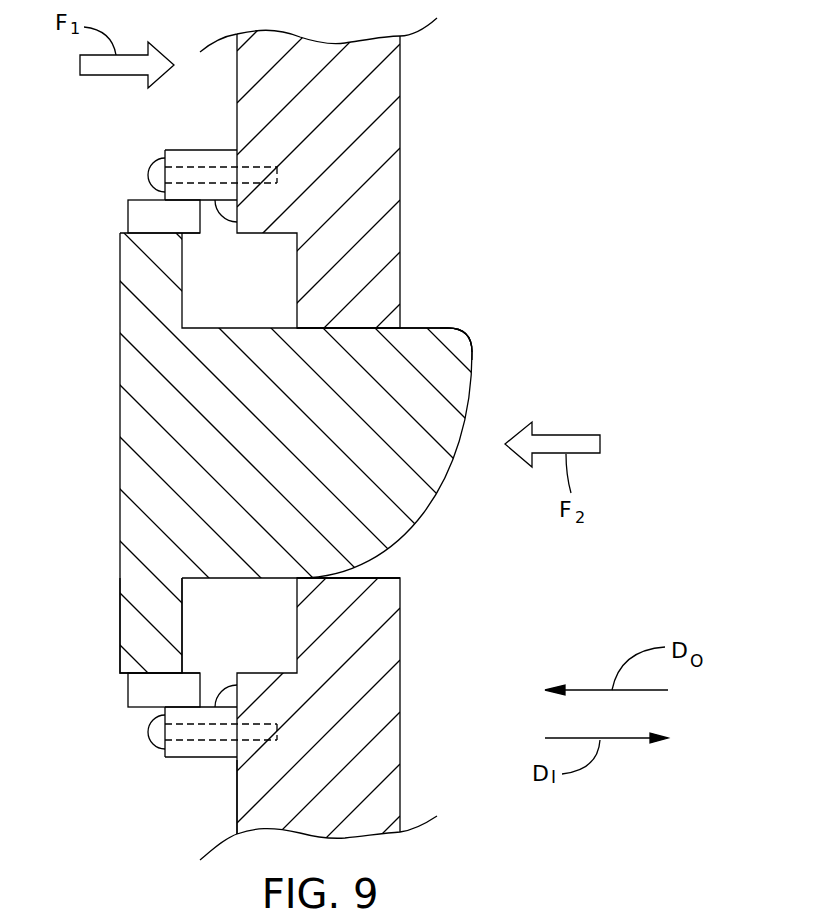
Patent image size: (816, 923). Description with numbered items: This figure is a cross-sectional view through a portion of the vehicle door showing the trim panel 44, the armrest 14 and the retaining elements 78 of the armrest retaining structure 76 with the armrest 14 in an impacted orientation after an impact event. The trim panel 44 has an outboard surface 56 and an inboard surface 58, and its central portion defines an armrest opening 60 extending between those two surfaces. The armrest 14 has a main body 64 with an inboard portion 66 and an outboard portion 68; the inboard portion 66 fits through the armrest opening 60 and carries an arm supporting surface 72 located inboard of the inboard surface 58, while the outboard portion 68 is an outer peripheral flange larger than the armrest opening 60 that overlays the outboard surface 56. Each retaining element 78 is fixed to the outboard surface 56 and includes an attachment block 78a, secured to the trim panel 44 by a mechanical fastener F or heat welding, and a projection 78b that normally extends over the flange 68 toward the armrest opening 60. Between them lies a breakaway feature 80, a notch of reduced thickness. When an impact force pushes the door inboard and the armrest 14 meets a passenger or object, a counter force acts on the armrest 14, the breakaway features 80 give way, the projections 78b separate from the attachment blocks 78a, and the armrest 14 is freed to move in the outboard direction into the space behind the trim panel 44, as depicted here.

The armrest 14 is at (480, 338).
The trim panel 44 is at (402, 124).
The outboard surface 56 is at (237, 818).
The inboard surface 58 is at (402, 692).
The armrest opening 60 is at (362, 576).
The main body 64 is at (368, 455).
The inboard portion 66 is at (445, 340).
The outboard portion 68 is at (143, 640).
The arm supporting surface 72 is at (402, 326).
The armrest retaining structure 76 is at (189, 147).
The retaining element 78 is at (160, 740).
The attachment block 78a is at (200, 150).
The projection 78b is at (143, 219).
The breakaway feature 80 is at (240, 214).
The mechanical fastener F is at (163, 167).